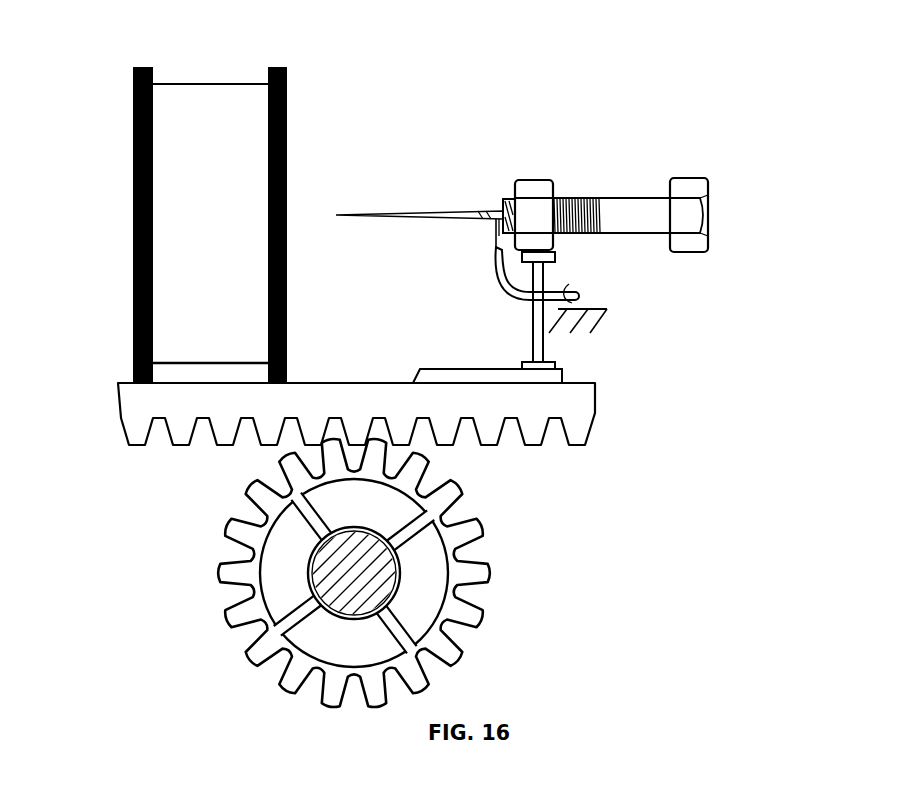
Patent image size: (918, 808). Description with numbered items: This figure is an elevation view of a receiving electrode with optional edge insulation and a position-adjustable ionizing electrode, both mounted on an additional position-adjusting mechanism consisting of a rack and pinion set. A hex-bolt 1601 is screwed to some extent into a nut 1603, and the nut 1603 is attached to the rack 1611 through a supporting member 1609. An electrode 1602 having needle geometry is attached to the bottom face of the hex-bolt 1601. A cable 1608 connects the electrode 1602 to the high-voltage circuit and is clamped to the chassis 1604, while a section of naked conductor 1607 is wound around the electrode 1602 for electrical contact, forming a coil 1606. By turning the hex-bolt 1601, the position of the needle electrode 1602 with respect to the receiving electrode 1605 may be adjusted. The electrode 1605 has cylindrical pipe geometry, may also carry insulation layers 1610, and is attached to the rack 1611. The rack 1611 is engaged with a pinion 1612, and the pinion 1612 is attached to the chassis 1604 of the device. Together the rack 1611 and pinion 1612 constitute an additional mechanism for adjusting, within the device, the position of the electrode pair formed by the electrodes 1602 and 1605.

The hex-bolt 1601 is at (708, 207).
The electrode 1602 is at (383, 212).
The nut 1603 is at (553, 186).
The chassis 1604 is at (607, 309).
The electrode 1605 is at (217, 85).
The coil 1606 is at (490, 208).
The naked conductor 1607 is at (495, 236).
The cable 1608 is at (497, 280).
The supporting member 1609 is at (487, 369).
The insulation layers 1610 is at (287, 147).
The rack 1611 is at (118, 393).
The pinion 1612 is at (230, 498).